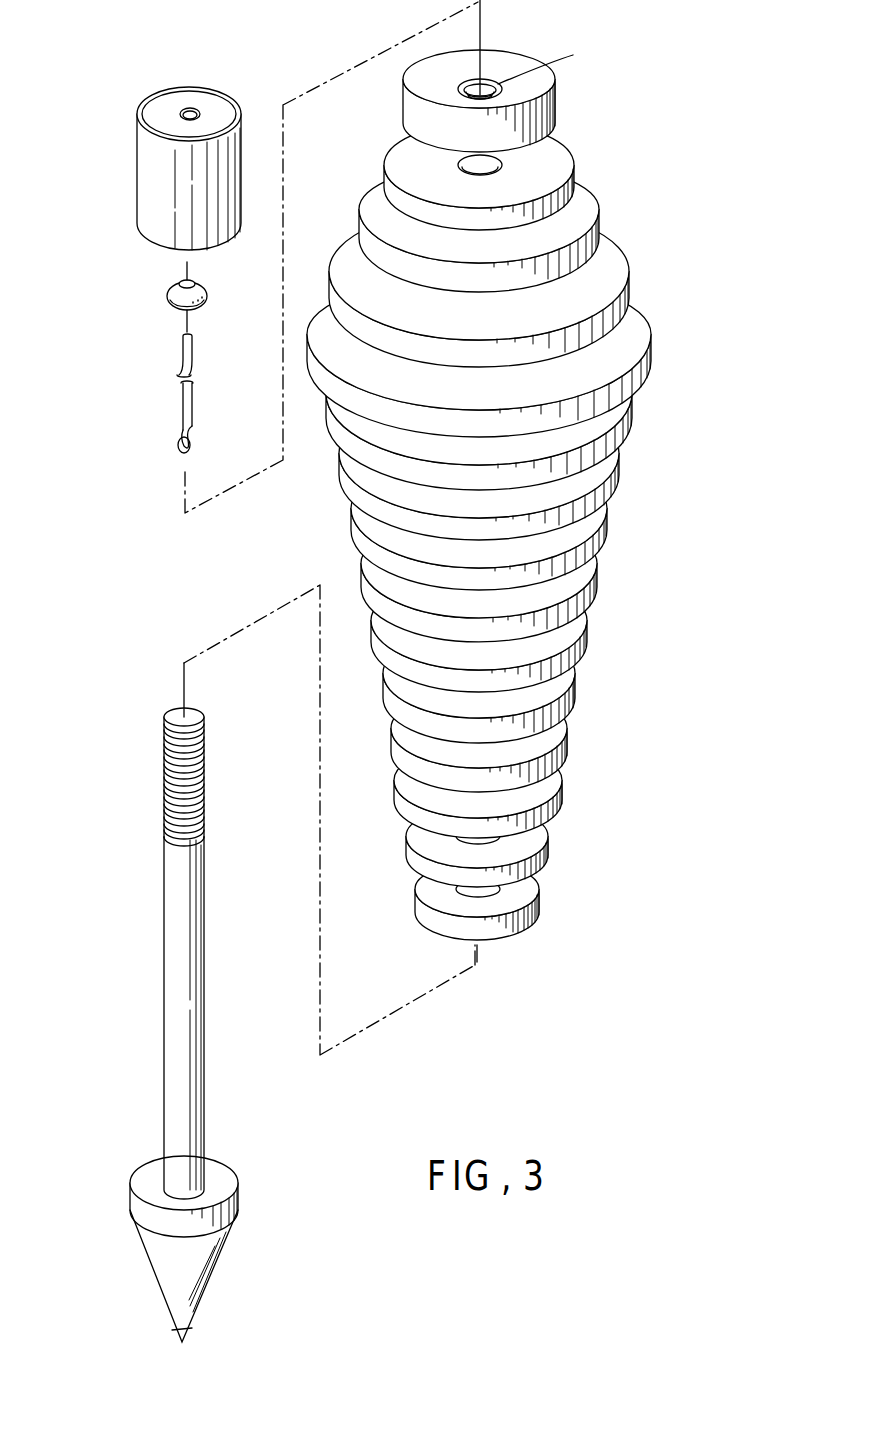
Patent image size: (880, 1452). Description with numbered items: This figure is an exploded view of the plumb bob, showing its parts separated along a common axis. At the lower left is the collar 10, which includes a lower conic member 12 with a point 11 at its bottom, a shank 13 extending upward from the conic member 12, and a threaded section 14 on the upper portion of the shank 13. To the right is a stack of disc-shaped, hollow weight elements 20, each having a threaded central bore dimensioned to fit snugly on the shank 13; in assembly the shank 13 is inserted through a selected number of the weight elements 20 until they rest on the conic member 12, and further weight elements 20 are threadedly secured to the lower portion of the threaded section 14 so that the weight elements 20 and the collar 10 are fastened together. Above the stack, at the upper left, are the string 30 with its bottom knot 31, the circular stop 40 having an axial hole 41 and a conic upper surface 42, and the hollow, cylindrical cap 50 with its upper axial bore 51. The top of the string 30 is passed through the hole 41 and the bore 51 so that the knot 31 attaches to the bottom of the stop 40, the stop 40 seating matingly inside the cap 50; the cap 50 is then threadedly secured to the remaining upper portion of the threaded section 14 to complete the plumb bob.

The collar 10 is at (158, 1013).
The point 11 is at (173, 1333).
The lower conic member 12 is at (217, 1172).
The shank 13 is at (183, 985).
The threaded section 14 is at (197, 768).
The weight elements 20 is at (633, 533).
The string 30 is at (131, 432).
The bottom knot 31 is at (178, 447).
The circular stop 40 is at (131, 300).
The axial hole 41 is at (182, 283).
The conic upper surface 42 is at (180, 302).
The cap 50 is at (143, 160).
The upper axial bore 51 is at (176, 110).